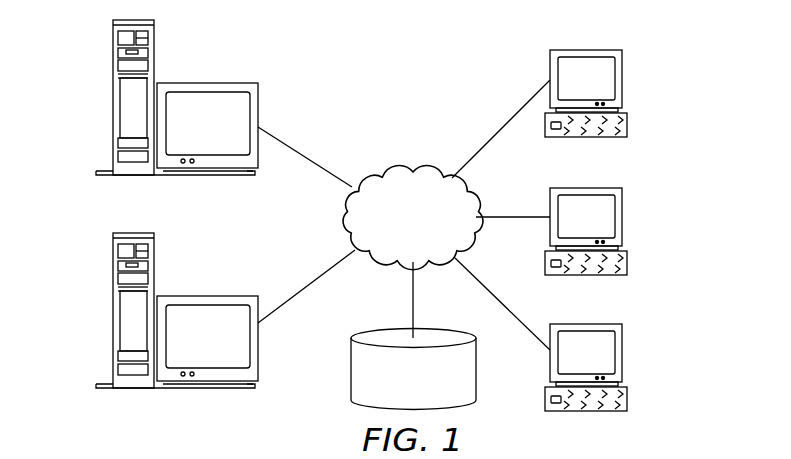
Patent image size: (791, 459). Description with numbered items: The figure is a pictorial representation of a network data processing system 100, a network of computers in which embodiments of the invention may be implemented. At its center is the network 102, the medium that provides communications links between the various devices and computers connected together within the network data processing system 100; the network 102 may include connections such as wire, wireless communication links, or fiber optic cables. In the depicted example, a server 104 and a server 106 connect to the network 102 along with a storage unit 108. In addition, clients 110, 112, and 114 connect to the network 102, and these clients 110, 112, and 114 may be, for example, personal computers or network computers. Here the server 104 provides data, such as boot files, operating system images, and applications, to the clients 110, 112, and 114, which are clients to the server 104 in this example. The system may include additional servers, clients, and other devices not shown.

The network data processing system 100 is at (458, 63).
The network 102 is at (385, 170).
The server 104 is at (113, 100).
The server 106 is at (113, 312).
The storage unit 108 is at (351, 378).
The client 110 is at (622, 78).
The client 112 is at (622, 218).
The client 114 is at (622, 352).